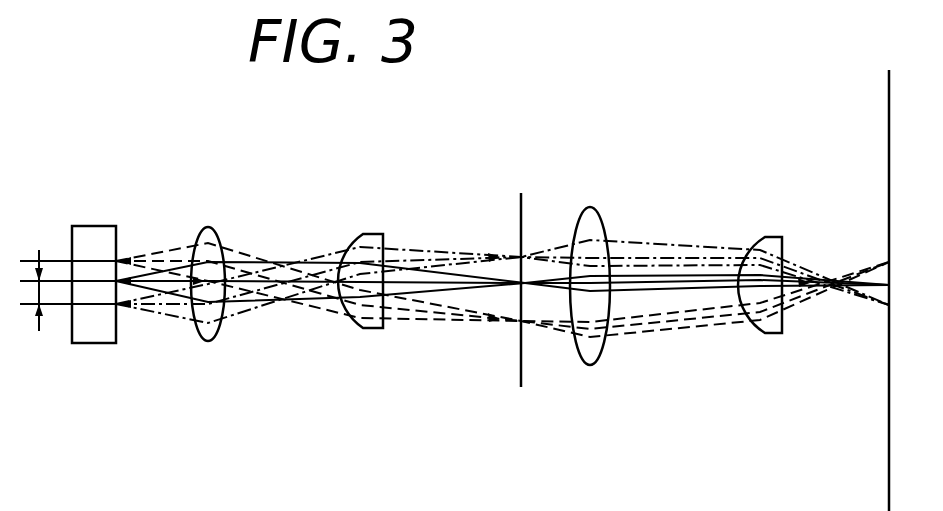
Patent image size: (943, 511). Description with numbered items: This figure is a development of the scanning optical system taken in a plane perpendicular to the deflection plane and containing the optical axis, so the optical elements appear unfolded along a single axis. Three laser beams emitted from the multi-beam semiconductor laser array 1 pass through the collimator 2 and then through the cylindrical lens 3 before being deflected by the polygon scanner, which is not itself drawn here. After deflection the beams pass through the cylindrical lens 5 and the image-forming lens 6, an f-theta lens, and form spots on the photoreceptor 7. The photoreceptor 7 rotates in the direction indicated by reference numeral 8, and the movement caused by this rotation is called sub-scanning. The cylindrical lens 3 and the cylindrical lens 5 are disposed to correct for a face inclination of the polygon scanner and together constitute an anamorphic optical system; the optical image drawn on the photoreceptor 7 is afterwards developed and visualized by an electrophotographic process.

The multi-beam semiconductor laser array 1 is at (95, 346).
The collimator 2 is at (197, 333).
The cylindrical lens 3 is at (358, 333).
The cylindrical lens 5 is at (755, 334).
The image-forming lens 6 is at (576, 352).
The photoreceptor 7 is at (37, 292).
The rotation direction 8 is at (520, 348).